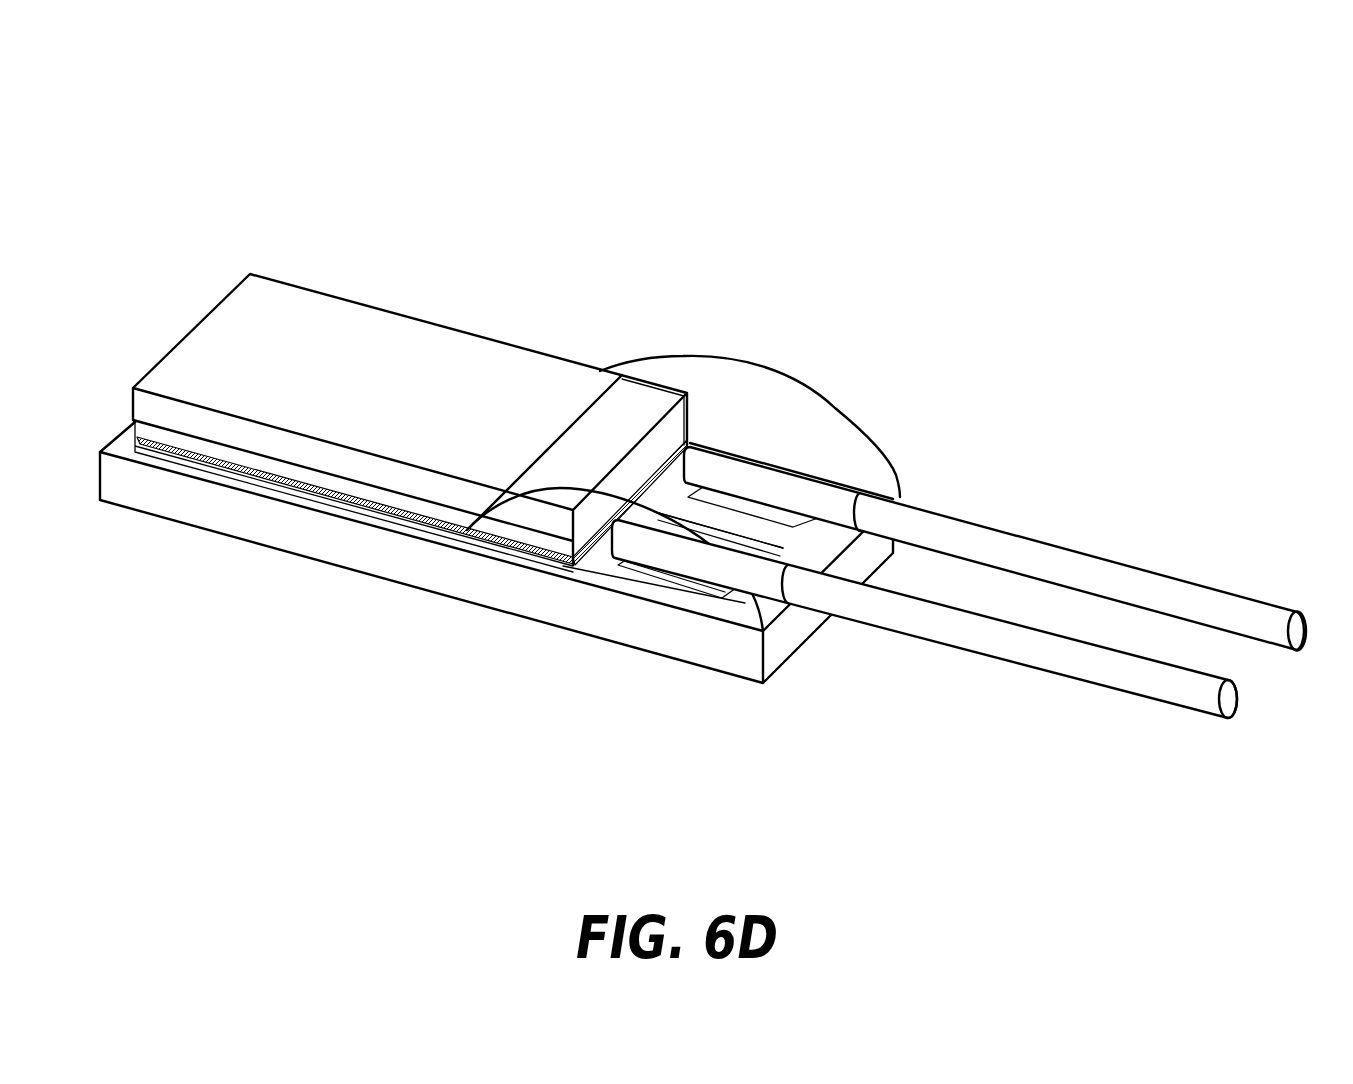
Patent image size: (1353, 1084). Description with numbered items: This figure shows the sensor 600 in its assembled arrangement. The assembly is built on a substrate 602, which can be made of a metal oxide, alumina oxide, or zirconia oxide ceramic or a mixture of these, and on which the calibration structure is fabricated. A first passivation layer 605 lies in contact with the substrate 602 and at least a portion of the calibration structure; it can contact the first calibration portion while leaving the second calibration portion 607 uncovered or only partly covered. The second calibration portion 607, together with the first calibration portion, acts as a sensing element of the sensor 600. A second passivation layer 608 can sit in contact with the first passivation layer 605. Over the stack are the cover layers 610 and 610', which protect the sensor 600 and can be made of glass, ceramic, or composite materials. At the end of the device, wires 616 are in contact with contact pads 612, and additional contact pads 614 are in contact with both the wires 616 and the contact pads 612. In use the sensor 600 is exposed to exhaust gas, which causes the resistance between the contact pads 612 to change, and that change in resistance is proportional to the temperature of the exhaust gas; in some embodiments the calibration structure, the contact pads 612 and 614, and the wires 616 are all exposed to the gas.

The sensor design 600 is at (703, 404).
The substrate 602 is at (535, 603).
The first passivation layer 605 is at (357, 505).
The second calibration portion 607 is at (732, 537).
The second passivation layer 608 is at (247, 460).
The cover layer 610 is at (410, 398).
The cover layer 610' is at (683, 457).
The contact pads 612 is at (807, 526).
The contact pads 614 is at (787, 513).
The wires 616 is at (1169, 567).